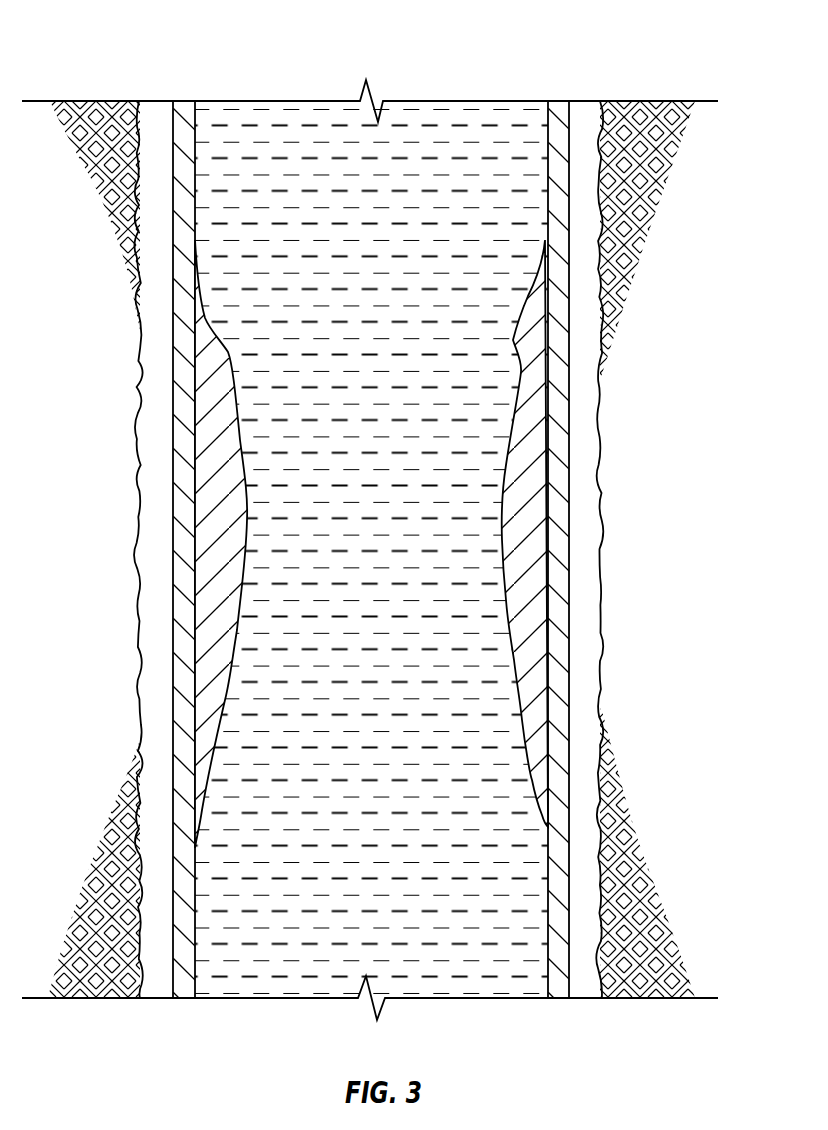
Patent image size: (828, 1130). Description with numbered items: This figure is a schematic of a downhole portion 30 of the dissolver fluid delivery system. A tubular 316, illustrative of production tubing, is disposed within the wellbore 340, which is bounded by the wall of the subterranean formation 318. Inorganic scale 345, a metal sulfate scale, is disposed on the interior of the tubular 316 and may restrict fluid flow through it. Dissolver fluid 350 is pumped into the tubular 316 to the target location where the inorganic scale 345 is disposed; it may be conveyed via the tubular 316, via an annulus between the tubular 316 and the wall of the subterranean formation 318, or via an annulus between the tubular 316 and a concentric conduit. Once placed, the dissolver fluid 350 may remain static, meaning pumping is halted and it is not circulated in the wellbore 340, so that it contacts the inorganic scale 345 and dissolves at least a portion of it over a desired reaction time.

The downhole portion 30 is at (251, 62).
The tubular 316 is at (183, 327).
The subterranean formation 318 is at (712, 284).
The wellbore 340 is at (139, 580).
The inorganic scale 345 is at (203, 507).
The dissolver fluid 350 is at (433, 125).